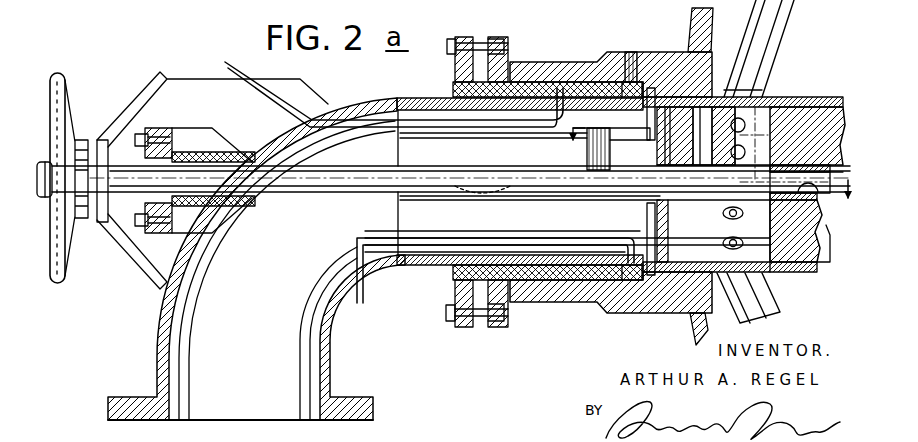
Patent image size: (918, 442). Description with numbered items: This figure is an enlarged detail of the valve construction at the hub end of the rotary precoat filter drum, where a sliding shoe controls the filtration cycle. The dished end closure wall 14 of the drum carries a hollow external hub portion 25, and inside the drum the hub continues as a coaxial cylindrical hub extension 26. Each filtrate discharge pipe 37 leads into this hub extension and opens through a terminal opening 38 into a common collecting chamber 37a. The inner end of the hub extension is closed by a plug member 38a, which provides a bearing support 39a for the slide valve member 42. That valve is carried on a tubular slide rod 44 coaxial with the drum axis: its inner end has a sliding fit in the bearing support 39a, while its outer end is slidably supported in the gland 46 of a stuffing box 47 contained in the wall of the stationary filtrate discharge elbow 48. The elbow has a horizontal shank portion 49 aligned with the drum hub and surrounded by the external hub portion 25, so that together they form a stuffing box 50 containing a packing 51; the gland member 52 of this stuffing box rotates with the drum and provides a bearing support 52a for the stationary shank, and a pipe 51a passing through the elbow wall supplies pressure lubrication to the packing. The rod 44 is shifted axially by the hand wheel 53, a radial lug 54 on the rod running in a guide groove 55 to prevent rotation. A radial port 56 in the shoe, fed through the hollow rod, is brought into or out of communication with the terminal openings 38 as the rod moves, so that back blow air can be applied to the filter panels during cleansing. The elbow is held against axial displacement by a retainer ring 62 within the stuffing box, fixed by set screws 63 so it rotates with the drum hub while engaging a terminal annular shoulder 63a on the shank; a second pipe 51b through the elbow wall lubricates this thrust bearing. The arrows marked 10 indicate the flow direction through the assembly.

The fluid flow direction 10 is at (700, 178).
The dished end closure wall 14 is at (692, 20).
The hollow external hub portion 25 is at (572, 62).
The cylindrical hub extension 26 is at (768, 97).
The filtrate discharge pipe 37 is at (770, 50).
The common collecting chamber 37a is at (440, 228).
The terminal openings 38 is at (723, 243).
The plug member 38a is at (817, 118).
The bearing support 39a is at (818, 224).
The slide valve member 42 is at (690, 150).
The tubular slide rod 44 is at (328, 177).
The gland 46 is at (150, 128).
The stuffing box 47 is at (240, 213).
The filtrate discharge elbow 48 is at (352, 93).
The horizontal shank portion 49 is at (437, 252).
The stuffing box 50 is at (583, 338).
The packing 51 is at (528, 82).
The lubrication pipe 51a is at (283, 74).
The lubrication pipe 51b is at (365, 292).
The gland member 52 is at (453, 70).
The bearing support 52a is at (453, 272).
The hand wheel 53 is at (61, 80).
The radial lug 54 is at (597, 152).
The guide groove 55 is at (636, 140).
The radial port 56 is at (705, 183).
The retainer ring 62 is at (630, 280).
The set screws 63 is at (630, 52).
The terminal annular shoulder 63a is at (637, 82).